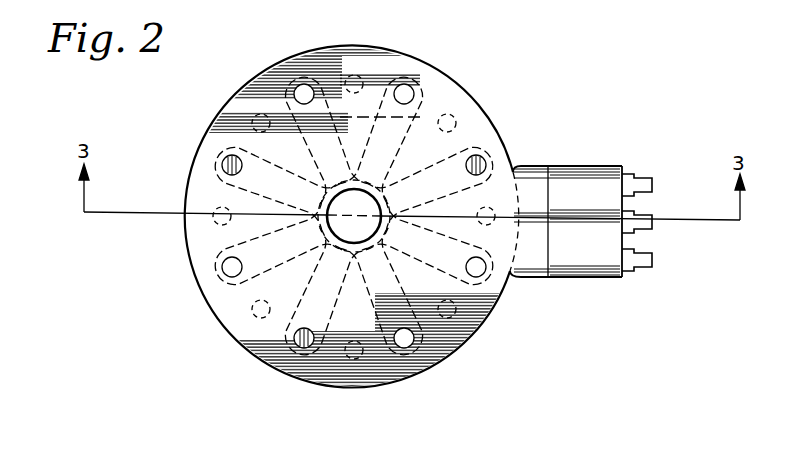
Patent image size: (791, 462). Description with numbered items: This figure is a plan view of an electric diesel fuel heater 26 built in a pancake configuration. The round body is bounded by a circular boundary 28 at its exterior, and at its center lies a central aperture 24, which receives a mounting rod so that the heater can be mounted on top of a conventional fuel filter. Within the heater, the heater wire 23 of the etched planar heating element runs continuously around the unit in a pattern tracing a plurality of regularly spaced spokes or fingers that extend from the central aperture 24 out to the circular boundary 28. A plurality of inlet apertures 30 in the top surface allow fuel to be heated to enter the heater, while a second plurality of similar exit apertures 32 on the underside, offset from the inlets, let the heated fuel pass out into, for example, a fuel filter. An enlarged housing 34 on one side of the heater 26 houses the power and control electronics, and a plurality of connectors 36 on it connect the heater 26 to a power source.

The heater wire 23 is at (478, 148).
The central aperture 24 is at (330, 203).
The electric diesel fuel heater 26 is at (432, 63).
The circular boundary 28 is at (274, 67).
The inlet apertures 30 is at (397, 85).
The exit apertures 32 is at (350, 358).
The enlarged housing 34 is at (601, 166).
The connectors 36 is at (652, 222).